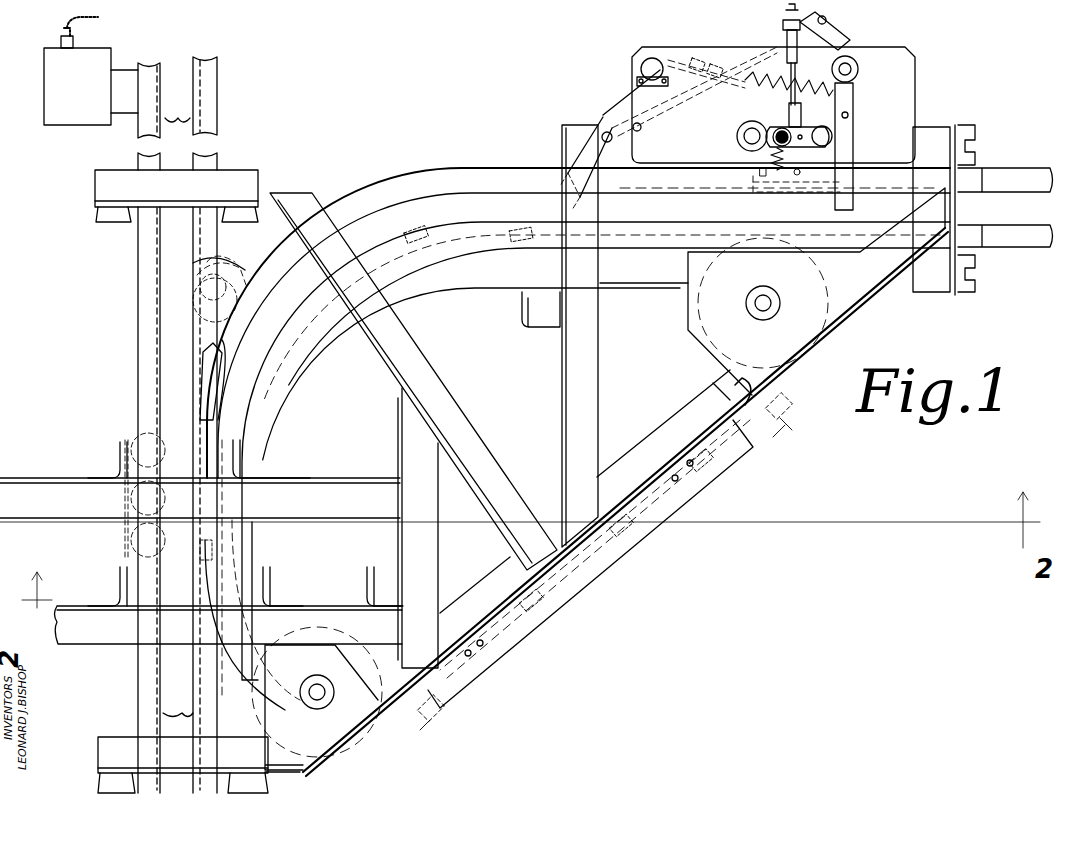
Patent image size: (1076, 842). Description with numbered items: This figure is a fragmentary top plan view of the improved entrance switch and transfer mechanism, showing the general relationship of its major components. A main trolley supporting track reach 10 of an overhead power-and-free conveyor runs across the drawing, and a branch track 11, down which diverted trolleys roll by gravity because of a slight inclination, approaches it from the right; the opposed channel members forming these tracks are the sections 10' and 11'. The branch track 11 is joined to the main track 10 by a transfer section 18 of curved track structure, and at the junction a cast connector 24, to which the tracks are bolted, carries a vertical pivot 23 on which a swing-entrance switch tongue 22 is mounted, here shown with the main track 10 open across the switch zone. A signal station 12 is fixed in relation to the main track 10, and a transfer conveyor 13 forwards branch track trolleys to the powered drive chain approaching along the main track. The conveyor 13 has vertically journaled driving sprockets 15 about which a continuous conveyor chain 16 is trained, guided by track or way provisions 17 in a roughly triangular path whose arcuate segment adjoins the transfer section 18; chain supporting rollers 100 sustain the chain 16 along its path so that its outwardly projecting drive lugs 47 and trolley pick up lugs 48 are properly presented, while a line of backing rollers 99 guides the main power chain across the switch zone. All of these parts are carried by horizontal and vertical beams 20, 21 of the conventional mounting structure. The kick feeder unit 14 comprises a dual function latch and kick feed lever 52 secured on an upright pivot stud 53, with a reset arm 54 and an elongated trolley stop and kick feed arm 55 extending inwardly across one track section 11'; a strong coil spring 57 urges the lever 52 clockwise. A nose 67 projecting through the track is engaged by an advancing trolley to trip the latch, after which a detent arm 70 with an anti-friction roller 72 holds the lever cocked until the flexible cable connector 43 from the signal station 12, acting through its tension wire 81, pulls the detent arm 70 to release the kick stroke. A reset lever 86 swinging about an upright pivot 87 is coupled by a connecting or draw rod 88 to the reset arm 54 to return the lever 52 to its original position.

The main trolley supporting track reach 10 is at (181, 425).
The channel members of main track 10' is at (178, 136).
The branch track 11 is at (1005, 168).
The channel members of branch track 11' is at (1005, 237).
The signal station 12 is at (68, 126).
The transfer conveyor 13 is at (604, 585).
The kick feeder unit 14 is at (627, 79).
The driving sprockets 15 is at (827, 322).
The conveyor chain 16 is at (392, 725).
The track or way provisions 17 is at (300, 330).
The transfer section of curved track structure 18 is at (482, 162).
The horizontal beams 20 is at (448, 362).
The vertical beams 21 is at (548, 320).
The swing-entrance switch tongue 22 is at (198, 352).
The vertical pivot 23 is at (230, 300).
The cast connector 24 is at (226, 268).
The flexible cable connector 43 is at (95, 20).
The drive lugs 47 is at (773, 437).
The trolley pick up lugs 48 is at (790, 405).
The latch and kick feed lever 52 is at (862, 134).
The upright pivot stud 53 is at (858, 71).
The reset arm 54 is at (845, 32).
The trolley stop and kick feed arm 55 is at (855, 203).
The coil spring 57 is at (750, 124).
The nose 67 is at (760, 196).
The detent arm 70 is at (780, 130).
The anti-friction roller 72 is at (830, 147).
The tension wire 81 is at (798, 82).
The reset lever 86 is at (615, 118).
The upright pivot 87 is at (655, 58).
The connecting or draw rod 88 is at (740, 62).
The backing rollers 99 is at (125, 530).
The chain supporting rollers 100 is at (252, 375).